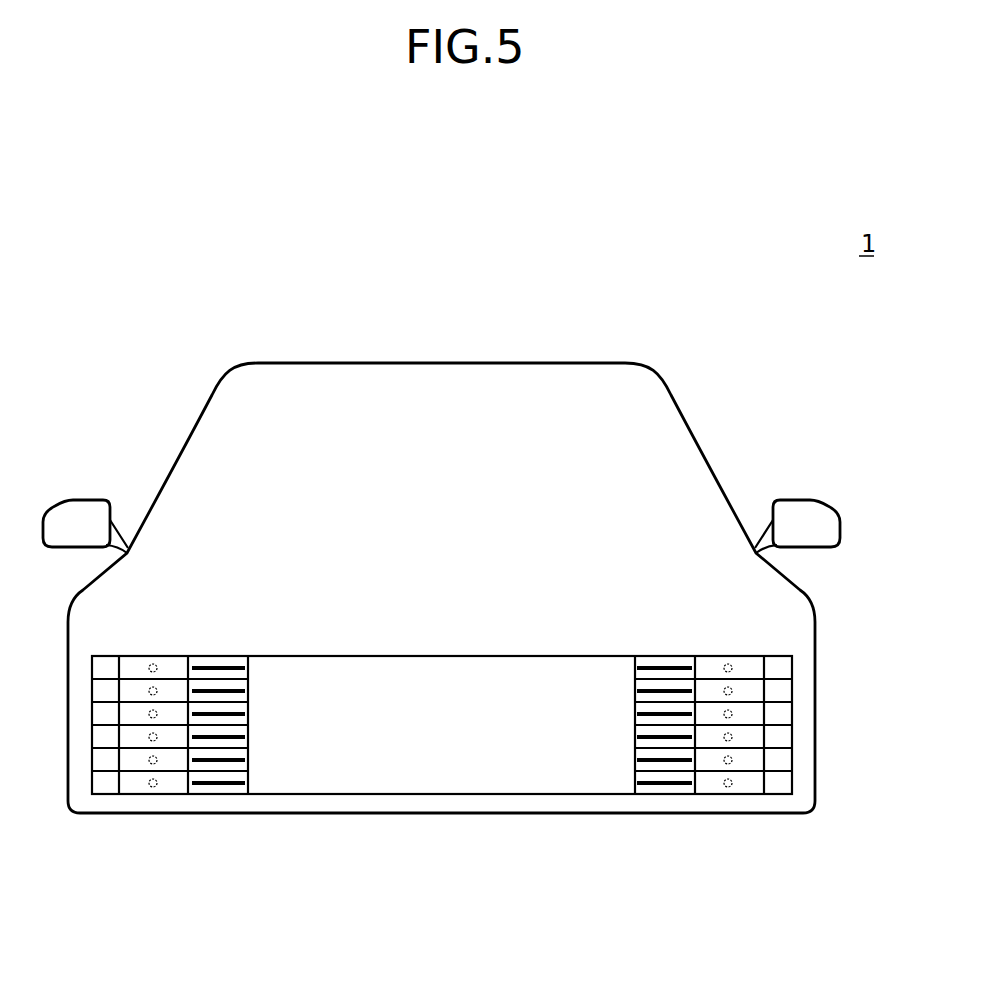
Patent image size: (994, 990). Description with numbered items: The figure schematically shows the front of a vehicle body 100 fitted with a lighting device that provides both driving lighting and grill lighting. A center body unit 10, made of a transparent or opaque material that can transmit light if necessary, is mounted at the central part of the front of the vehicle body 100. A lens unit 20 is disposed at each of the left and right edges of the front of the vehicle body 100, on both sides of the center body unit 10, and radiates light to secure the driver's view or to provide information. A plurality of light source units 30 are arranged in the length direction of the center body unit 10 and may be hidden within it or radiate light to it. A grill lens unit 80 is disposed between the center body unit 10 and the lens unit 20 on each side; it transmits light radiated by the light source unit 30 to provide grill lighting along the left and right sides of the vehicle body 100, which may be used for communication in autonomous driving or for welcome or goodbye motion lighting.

The vehicle body 100 is at (808, 598).
The center body unit 10 is at (460, 767).
The lens unit 20 is at (748, 785).
The light source unit 30 is at (723, 783).
The grill lens unit 80 is at (660, 787).